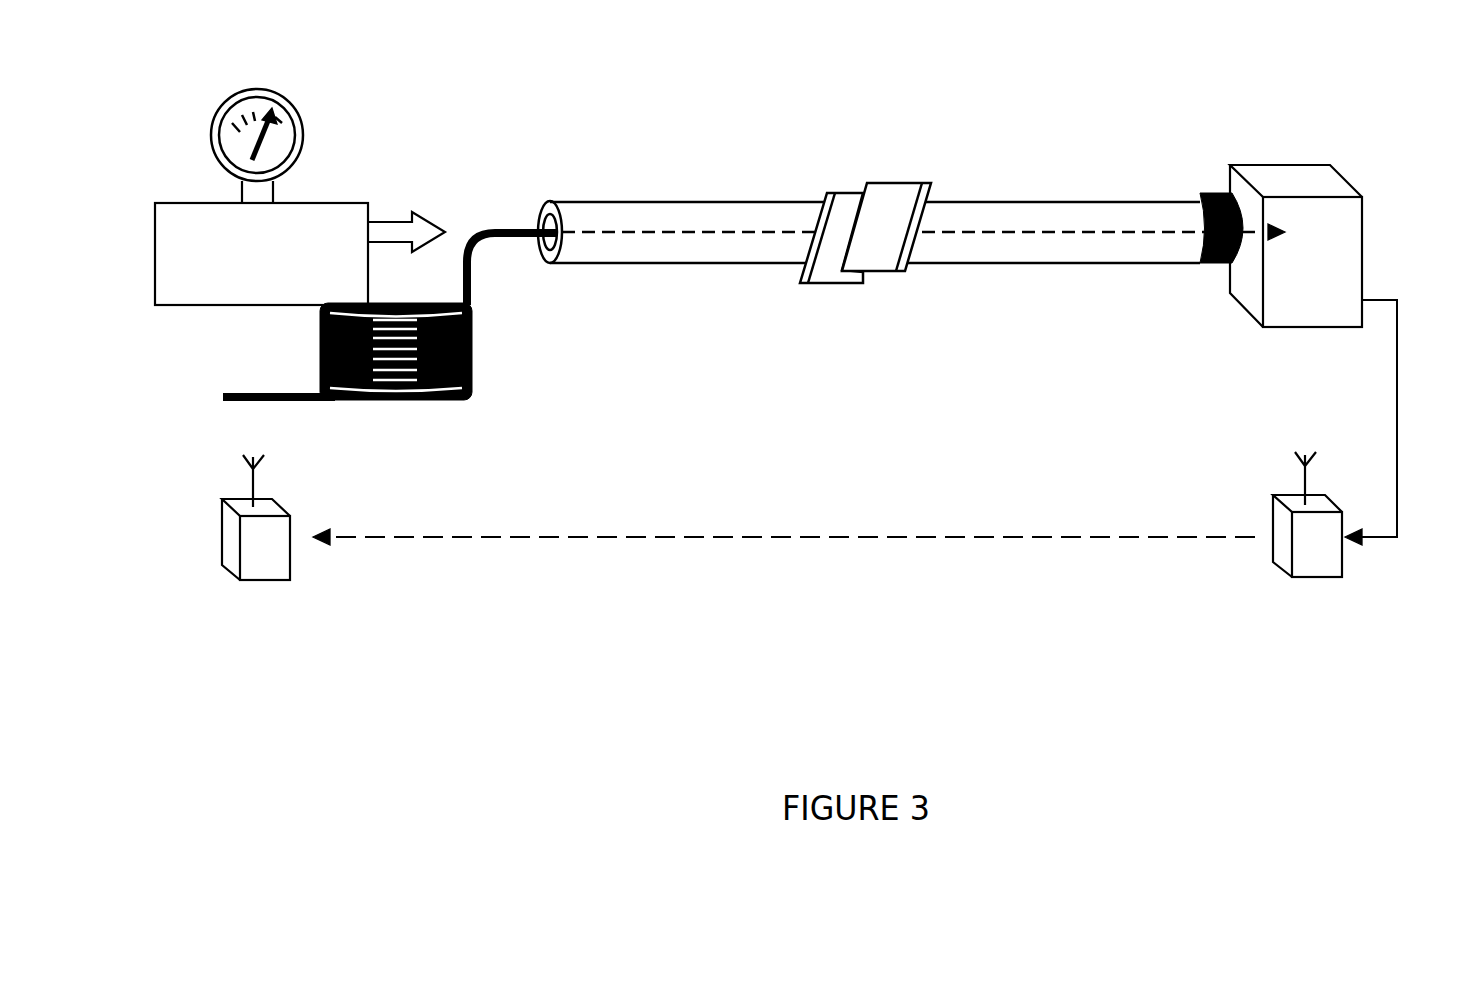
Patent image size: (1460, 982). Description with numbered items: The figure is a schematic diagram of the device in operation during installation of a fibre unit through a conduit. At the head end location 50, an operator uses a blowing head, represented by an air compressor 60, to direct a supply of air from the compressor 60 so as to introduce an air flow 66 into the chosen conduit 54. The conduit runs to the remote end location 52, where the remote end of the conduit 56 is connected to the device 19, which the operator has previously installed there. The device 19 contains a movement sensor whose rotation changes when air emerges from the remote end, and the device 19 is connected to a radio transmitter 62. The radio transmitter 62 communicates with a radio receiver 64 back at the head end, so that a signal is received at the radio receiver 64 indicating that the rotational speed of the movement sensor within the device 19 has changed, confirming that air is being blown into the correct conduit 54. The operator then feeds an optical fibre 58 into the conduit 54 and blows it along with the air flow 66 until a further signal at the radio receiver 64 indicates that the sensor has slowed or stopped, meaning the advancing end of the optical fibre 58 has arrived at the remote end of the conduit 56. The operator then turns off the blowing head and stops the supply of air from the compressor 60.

The head end location 50 is at (358, 158).
The air compressor 60 is at (172, 202).
The air flow 66 is at (432, 215).
The optical fibre 58 is at (250, 388).
The conduit 54 is at (735, 199).
The conduit 56 is at (1068, 200).
The remote end location 52 is at (1262, 133).
The device 19 is at (1365, 242).
The radio transmitter 62 is at (1325, 577).
The radio receiver 64 is at (263, 580).